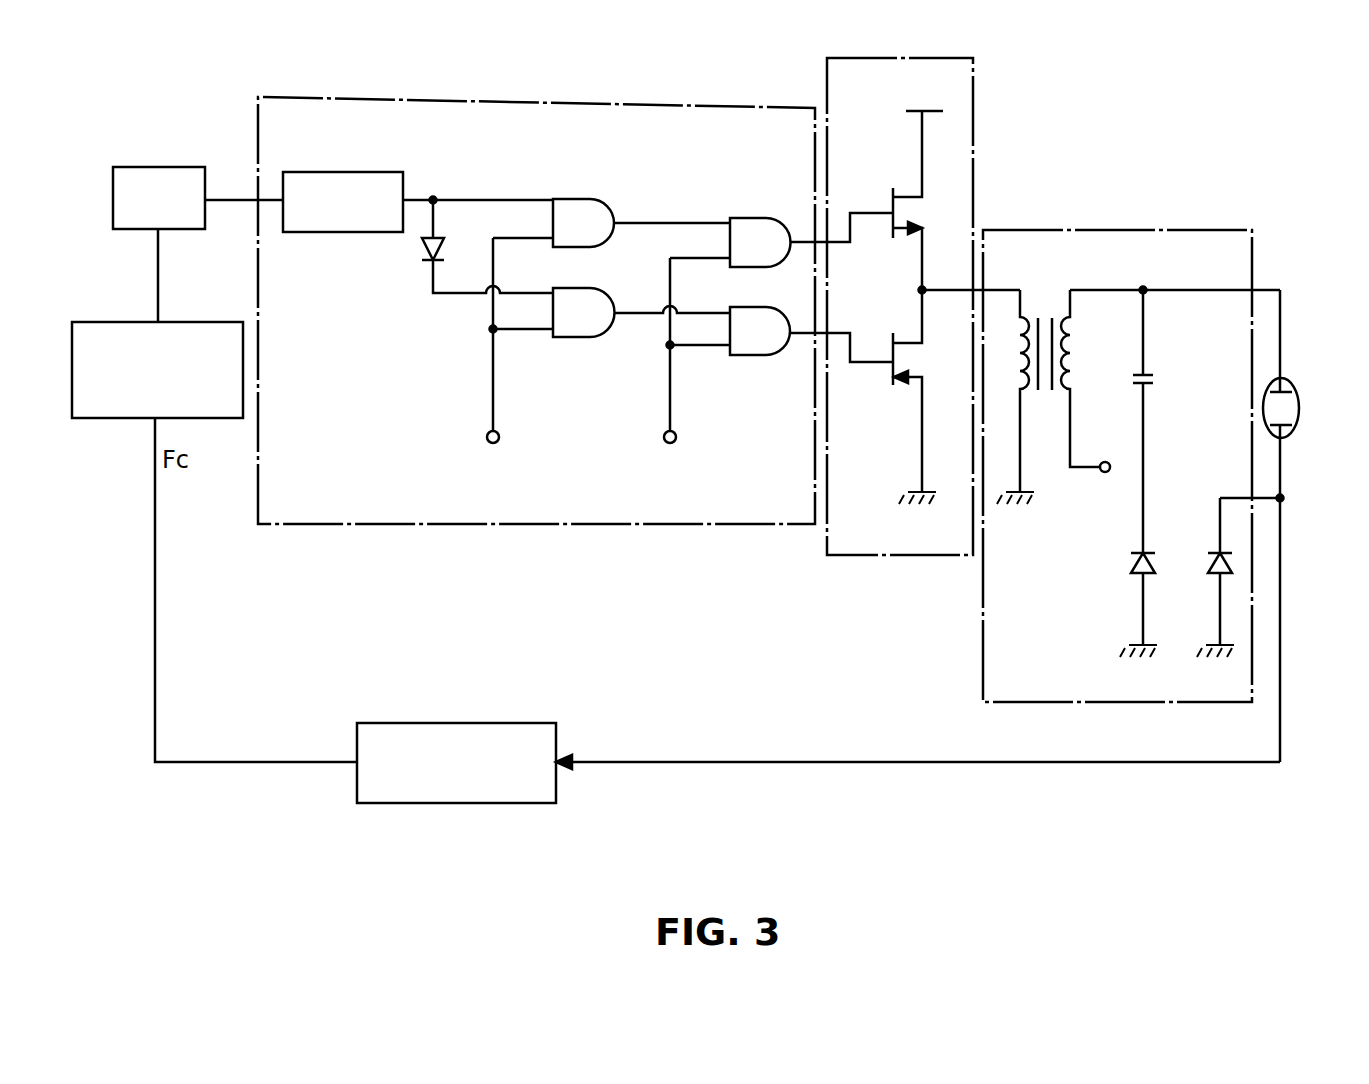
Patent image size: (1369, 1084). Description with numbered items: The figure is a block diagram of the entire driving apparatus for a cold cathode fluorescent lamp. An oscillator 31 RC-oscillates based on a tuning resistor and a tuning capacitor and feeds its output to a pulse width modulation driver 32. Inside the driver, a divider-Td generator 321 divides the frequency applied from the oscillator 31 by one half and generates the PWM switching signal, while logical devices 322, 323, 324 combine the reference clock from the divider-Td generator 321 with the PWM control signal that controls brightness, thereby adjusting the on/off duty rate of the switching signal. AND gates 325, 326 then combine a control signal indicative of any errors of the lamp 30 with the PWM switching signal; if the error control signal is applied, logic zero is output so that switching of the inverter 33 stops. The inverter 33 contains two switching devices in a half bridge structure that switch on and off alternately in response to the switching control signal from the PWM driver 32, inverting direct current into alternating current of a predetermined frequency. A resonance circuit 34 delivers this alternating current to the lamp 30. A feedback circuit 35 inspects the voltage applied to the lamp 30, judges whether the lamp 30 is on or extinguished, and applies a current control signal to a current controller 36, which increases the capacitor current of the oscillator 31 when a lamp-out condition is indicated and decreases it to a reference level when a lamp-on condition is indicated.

The lamp 30 is at (1300, 402).
The oscillator 31 is at (170, 167).
The pulse width modulation driver 32 is at (508, 526).
The divider-Td generator 321 is at (318, 234).
The logical device 322 is at (420, 252).
The logical device 323 is at (592, 197).
The logical device 324 is at (582, 340).
The AND gate 325 is at (752, 216).
The AND gate 326 is at (755, 358).
The inverter 33 is at (862, 557).
The resonance circuit 34 is at (983, 680).
The feedback circuit 35 is at (478, 805).
The current controller 36 is at (95, 418).